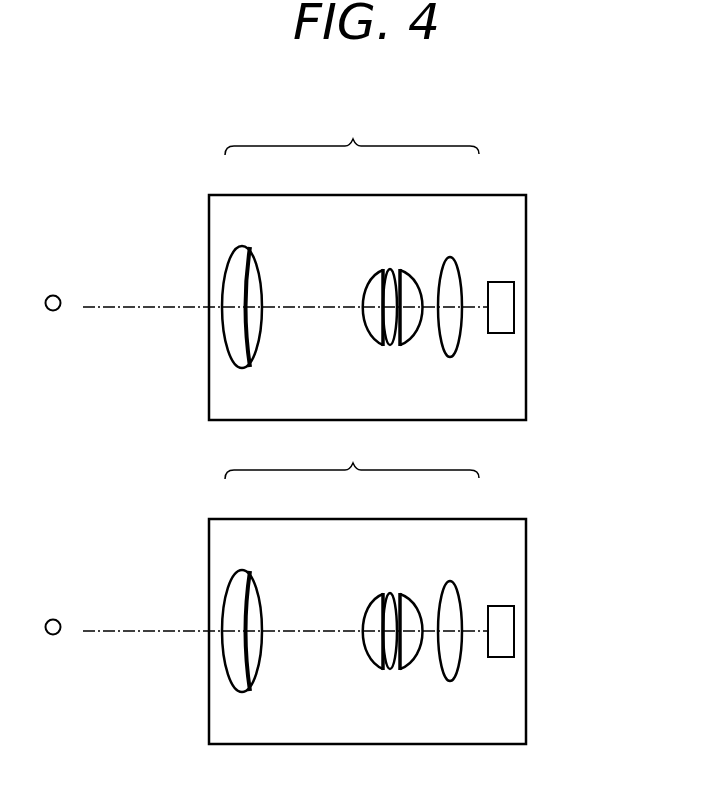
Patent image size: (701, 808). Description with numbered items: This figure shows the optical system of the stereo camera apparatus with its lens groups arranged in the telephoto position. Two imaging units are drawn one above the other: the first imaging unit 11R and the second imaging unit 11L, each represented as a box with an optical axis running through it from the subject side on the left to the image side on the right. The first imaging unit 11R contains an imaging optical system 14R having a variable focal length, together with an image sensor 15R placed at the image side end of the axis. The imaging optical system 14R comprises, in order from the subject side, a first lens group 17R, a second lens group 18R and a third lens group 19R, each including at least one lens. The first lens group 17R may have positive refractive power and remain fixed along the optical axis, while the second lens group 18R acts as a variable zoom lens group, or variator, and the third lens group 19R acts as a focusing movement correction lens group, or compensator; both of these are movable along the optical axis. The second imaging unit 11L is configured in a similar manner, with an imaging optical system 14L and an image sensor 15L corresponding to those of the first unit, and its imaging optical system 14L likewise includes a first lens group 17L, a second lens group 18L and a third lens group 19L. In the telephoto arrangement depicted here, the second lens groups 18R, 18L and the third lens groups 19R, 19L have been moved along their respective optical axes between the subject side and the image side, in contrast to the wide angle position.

The first imaging unit 11R is at (526, 210).
The imaging optical system 14R is at (352, 134).
The image sensor 15R is at (514, 290).
The first lens group 17R is at (248, 240).
The second lens group 18R is at (387, 258).
The third lens group 19R is at (448, 254).
The second imaging unit 11L is at (526, 534).
The imaging optical system 14L is at (352, 458).
The image sensor 15L is at (514, 614).
The first lens group 17L is at (248, 564).
The second lens group 18L is at (387, 582).
The third lens group 19L is at (448, 578).